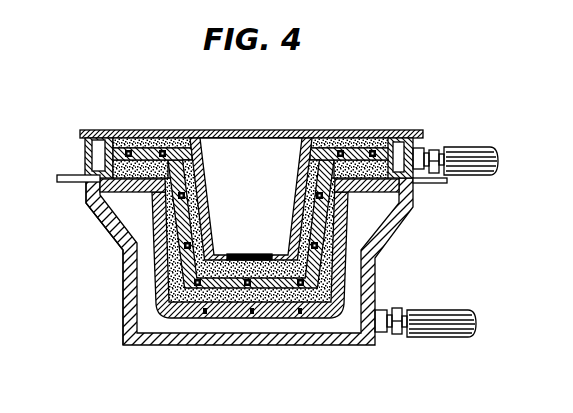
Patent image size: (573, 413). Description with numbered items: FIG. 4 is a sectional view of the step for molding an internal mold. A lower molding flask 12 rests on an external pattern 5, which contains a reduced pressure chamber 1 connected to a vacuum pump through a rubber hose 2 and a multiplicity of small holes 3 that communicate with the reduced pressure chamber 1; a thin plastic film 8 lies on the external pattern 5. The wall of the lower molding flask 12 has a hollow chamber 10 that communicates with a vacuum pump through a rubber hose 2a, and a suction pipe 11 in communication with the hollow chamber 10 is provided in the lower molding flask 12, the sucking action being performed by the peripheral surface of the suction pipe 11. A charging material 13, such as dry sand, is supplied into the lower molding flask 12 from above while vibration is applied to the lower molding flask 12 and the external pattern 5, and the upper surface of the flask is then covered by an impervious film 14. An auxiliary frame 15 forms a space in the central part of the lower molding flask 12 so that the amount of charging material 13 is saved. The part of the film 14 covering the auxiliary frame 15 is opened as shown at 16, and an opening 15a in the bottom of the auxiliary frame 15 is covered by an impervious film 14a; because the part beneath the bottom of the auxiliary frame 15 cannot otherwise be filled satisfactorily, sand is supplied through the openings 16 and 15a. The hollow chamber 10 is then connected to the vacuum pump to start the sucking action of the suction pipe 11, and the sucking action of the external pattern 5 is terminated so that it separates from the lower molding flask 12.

The reduced pressure chamber 1 is at (338, 314).
The rubber hose 2 is at (442, 312).
The rubber hose 2a is at (467, 156).
The small holes 3 is at (178, 306).
The external pattern 5 is at (130, 312).
The film 8 is at (67, 181).
The hollow chamber 10 is at (400, 141).
The suction pipe 11 is at (318, 137).
The lower molding flask 12 is at (88, 141).
The charging material 13 is at (135, 176).
The impervious film 14 is at (178, 131).
The impervious film 14a is at (234, 253).
The auxiliary frame 15 is at (309, 178).
The opening 15a is at (261, 255).
The opening 16 is at (257, 131).